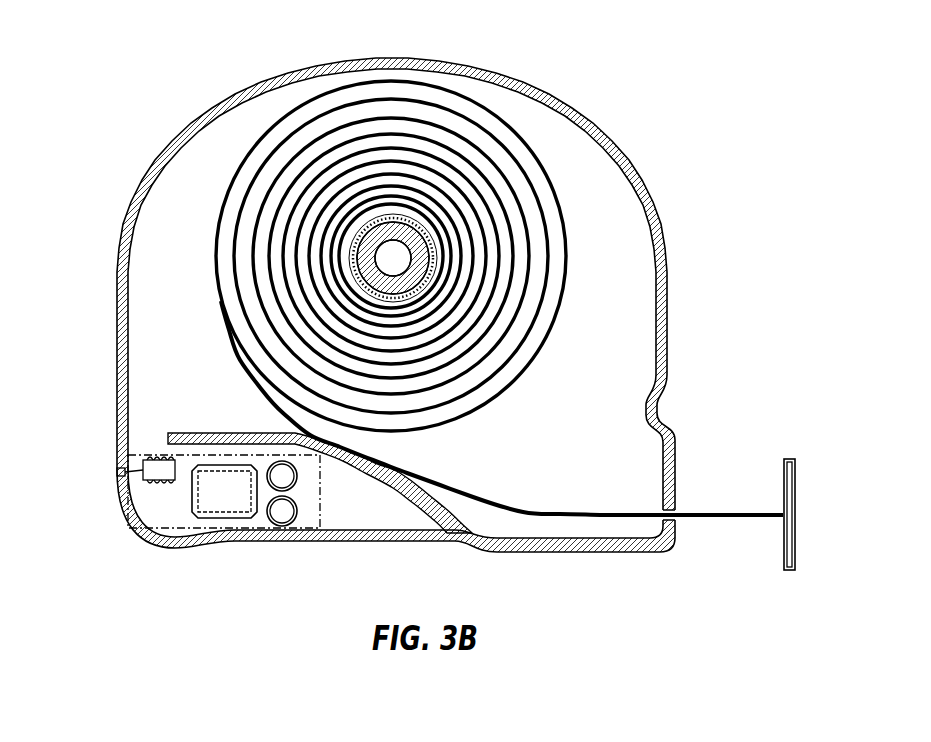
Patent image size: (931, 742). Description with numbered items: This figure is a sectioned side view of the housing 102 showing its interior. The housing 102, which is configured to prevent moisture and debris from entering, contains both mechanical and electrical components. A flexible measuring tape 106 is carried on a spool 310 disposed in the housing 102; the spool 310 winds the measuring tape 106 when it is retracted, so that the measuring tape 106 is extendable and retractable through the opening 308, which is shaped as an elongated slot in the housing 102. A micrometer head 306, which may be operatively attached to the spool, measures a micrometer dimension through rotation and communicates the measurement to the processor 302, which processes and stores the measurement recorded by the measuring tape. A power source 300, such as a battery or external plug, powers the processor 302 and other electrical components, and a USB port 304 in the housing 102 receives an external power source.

The housing 102 is at (122, 233).
The flexible measuring tape 106 is at (272, 376).
The power source 300 is at (287, 511).
The processor 302 is at (226, 497).
The USB port 304 is at (117, 474).
The micrometer head 306 is at (433, 258).
The opening 308 is at (675, 514).
The spool 310 is at (399, 282).